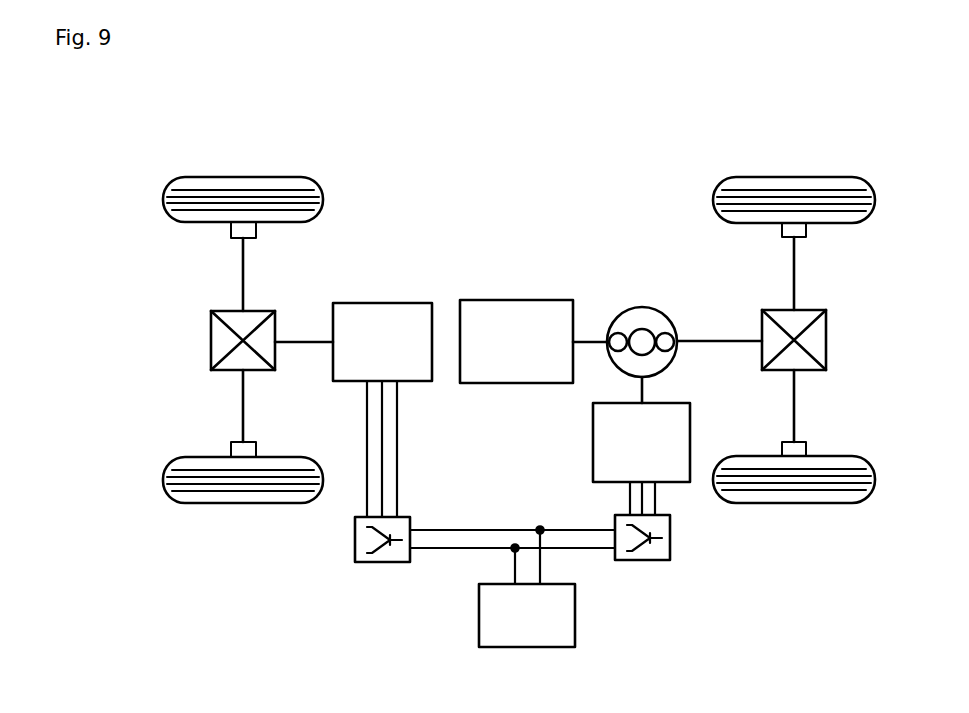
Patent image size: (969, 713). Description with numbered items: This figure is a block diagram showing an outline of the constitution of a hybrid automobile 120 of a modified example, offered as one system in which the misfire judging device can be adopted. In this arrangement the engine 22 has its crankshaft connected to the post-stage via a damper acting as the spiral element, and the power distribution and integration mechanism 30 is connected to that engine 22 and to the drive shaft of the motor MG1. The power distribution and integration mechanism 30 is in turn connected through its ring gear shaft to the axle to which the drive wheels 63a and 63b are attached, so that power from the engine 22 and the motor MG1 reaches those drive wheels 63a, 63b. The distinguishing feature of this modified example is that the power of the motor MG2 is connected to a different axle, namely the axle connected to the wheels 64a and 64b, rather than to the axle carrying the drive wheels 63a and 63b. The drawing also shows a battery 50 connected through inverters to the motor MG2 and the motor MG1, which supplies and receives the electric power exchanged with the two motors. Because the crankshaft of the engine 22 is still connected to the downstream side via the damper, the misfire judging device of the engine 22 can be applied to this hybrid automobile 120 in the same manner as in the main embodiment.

The hybrid automobile 120 is at (548, 152).
The wheel 64a is at (243, 177).
The wheel 64b is at (243, 503).
The drive wheel 63a is at (794, 177).
The drive wheel 63b is at (796, 503).
The motor MG2 is at (380, 303).
The motor MG1 is at (593, 443).
The engine 22 is at (517, 300).
The power distribution and integration mechanism 30 is at (642, 307).
The battery 50 is at (575, 615).